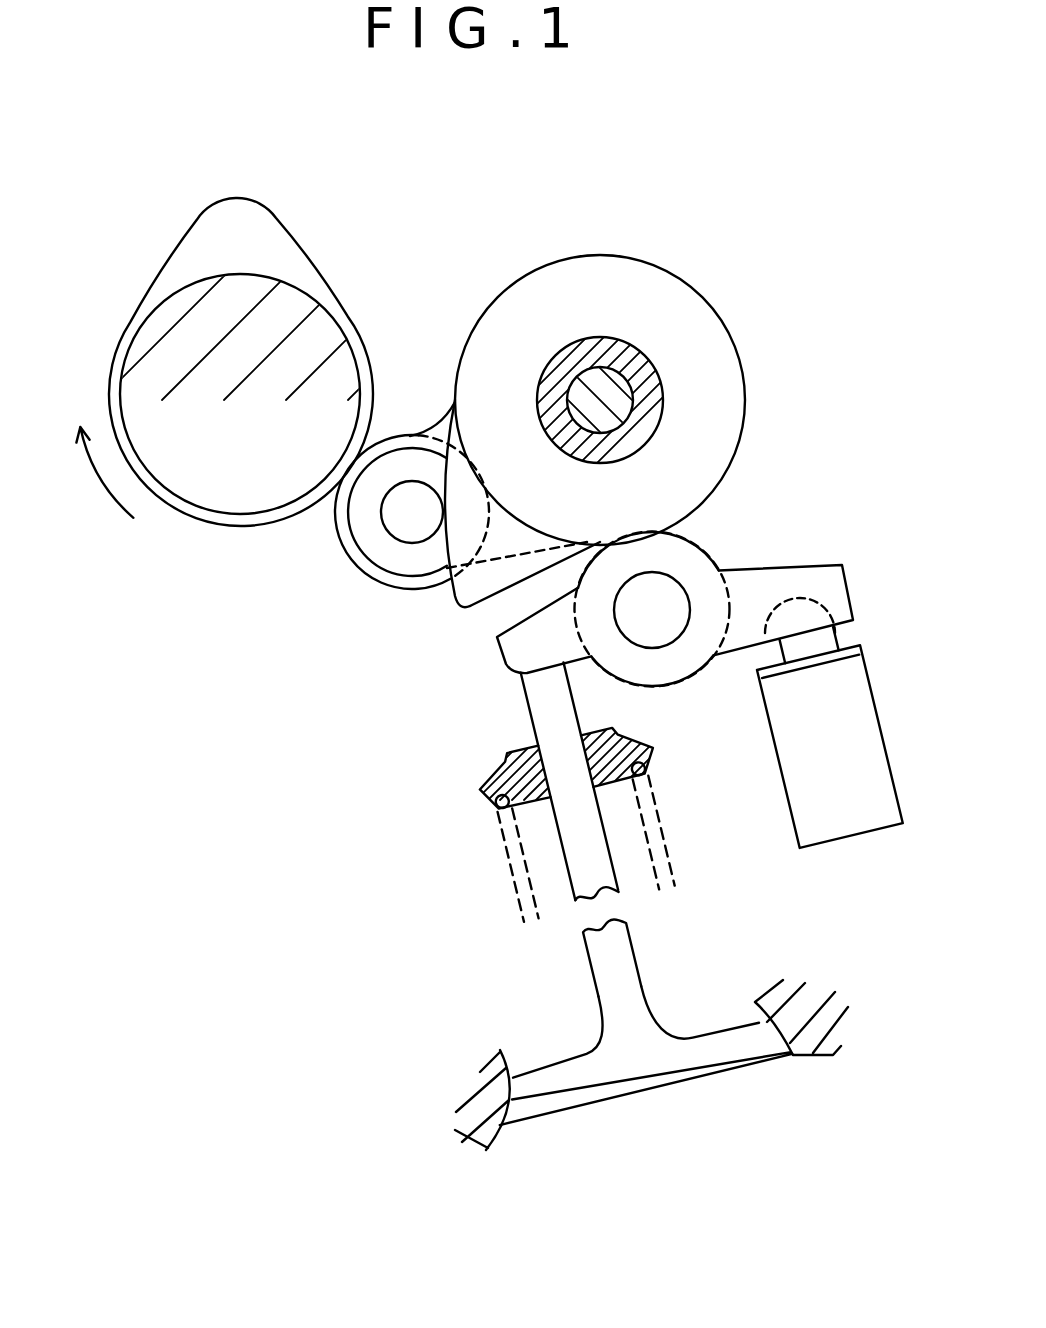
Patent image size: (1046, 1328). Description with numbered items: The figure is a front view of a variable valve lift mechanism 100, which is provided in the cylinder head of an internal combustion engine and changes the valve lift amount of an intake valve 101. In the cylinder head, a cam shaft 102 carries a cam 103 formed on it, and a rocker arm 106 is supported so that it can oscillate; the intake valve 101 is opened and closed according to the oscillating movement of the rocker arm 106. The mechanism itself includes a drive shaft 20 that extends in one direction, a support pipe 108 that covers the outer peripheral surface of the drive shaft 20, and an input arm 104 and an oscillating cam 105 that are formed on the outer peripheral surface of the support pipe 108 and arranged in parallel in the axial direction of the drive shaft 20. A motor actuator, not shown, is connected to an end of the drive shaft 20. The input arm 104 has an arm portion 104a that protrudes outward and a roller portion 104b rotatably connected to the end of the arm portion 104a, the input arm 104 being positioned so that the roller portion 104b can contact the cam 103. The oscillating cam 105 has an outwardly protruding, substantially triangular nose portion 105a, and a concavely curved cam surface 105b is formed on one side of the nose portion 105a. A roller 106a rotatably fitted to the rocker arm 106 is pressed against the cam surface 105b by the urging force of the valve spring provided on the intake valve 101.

The variable valve lift mechanism 100 is at (688, 219).
The intake valve 101 is at (530, 720).
The cam shaft 102 is at (177, 343).
The cam 103 is at (203, 245).
The input arm 104 is at (433, 412).
The arm portion 104a is at (407, 463).
The roller portion 104b is at (352, 562).
The oscillating cam 105 is at (695, 322).
The nose portion 105a is at (462, 598).
The cam surface 105b is at (498, 590).
The rocker arm 106 is at (825, 560).
The roller 106a is at (687, 533).
The support pipe 108 is at (665, 390).
The drive shaft 20 is at (598, 367).